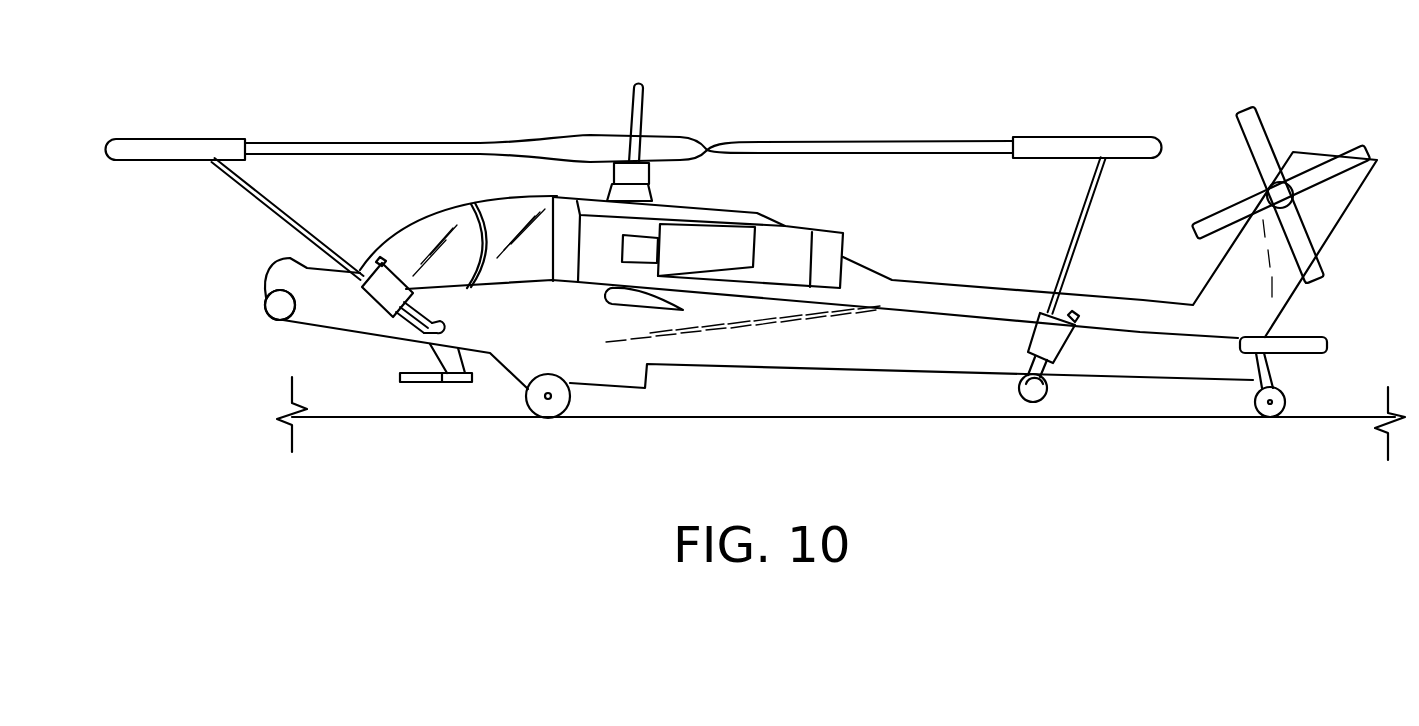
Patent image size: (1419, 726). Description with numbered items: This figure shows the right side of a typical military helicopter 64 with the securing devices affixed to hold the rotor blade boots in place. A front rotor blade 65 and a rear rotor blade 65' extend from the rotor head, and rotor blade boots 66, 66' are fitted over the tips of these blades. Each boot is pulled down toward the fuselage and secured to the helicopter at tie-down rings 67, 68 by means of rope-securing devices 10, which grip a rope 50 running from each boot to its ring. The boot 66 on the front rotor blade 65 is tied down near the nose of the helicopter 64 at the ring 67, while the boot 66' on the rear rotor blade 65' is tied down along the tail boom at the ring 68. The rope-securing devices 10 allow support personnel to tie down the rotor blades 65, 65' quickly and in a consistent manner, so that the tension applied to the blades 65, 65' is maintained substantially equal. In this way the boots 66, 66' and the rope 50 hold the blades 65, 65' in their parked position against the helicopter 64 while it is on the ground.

The rope-securing device 10 is at (380, 310).
The rope 50 is at (270, 199).
The military helicopter 64 is at (243, 277).
The front rotor blade 65 is at (476, 115).
The rear rotor blade 65' is at (860, 107).
The rotor blade boot 66 is at (176, 114).
The rotor blade boot 66' is at (1087, 111).
The tie-down ring 67 is at (441, 322).
The tie-down ring 68 is at (1018, 387).